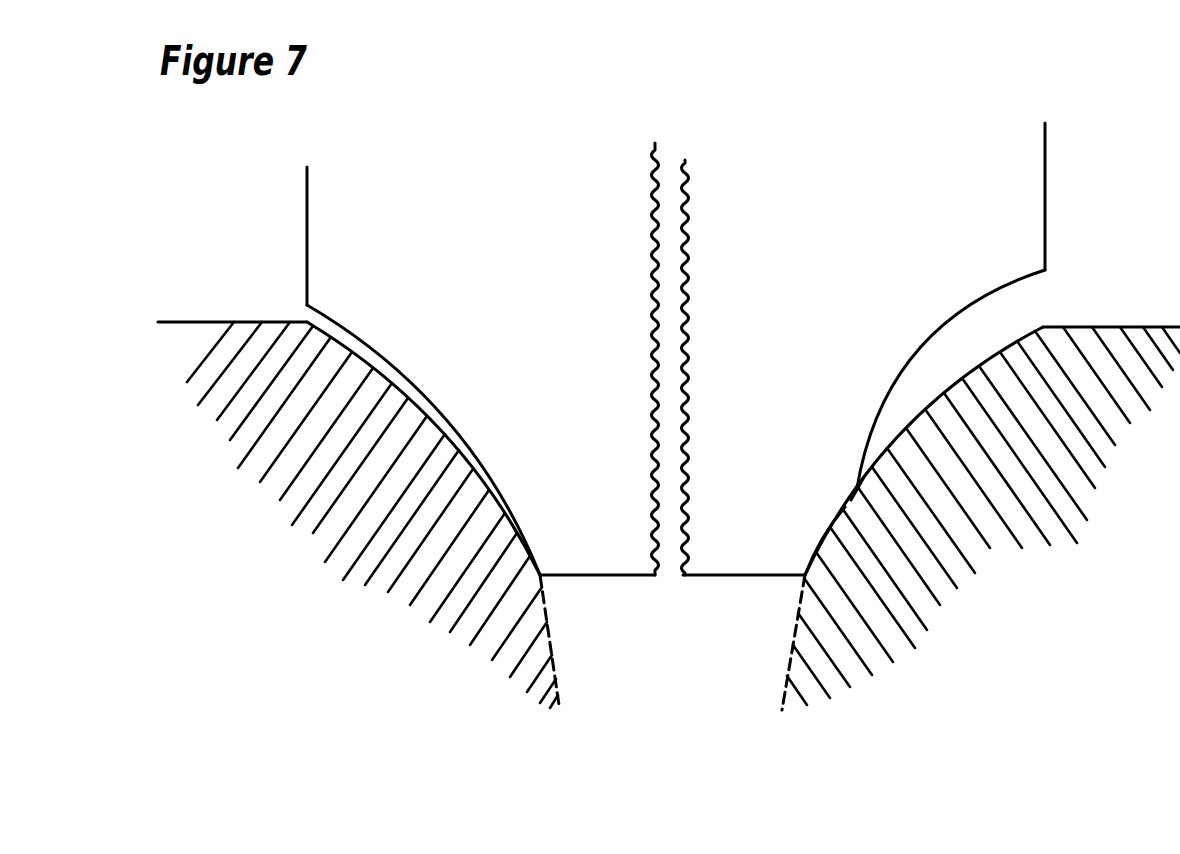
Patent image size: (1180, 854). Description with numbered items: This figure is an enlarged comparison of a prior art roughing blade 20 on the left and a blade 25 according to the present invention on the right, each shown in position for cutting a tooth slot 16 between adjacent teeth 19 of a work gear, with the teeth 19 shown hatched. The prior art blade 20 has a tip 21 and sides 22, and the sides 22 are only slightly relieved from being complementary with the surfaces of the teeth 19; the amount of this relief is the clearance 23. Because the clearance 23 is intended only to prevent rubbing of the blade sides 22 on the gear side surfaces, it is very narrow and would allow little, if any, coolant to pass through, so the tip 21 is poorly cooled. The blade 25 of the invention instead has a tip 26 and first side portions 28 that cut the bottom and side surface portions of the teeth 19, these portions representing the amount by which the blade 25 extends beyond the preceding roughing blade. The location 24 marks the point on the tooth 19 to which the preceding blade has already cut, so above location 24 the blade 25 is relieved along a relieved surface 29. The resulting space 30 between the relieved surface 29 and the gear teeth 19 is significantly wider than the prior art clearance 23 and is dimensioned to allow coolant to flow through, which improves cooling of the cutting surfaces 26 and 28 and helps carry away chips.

The tooth slot 16 is at (739, 697).
The teeth 19 is at (325, 498).
The blade 20 is at (477, 210).
The tip 21 is at (600, 575).
The sides 22 is at (398, 367).
The relief 23 is at (318, 323).
The location 24 is at (857, 488).
The blade 25 is at (857, 214).
The tip 26 is at (738, 575).
The first side portions 28 is at (828, 528).
The relieved surface 29 is at (962, 308).
The space 30 is at (1010, 312).